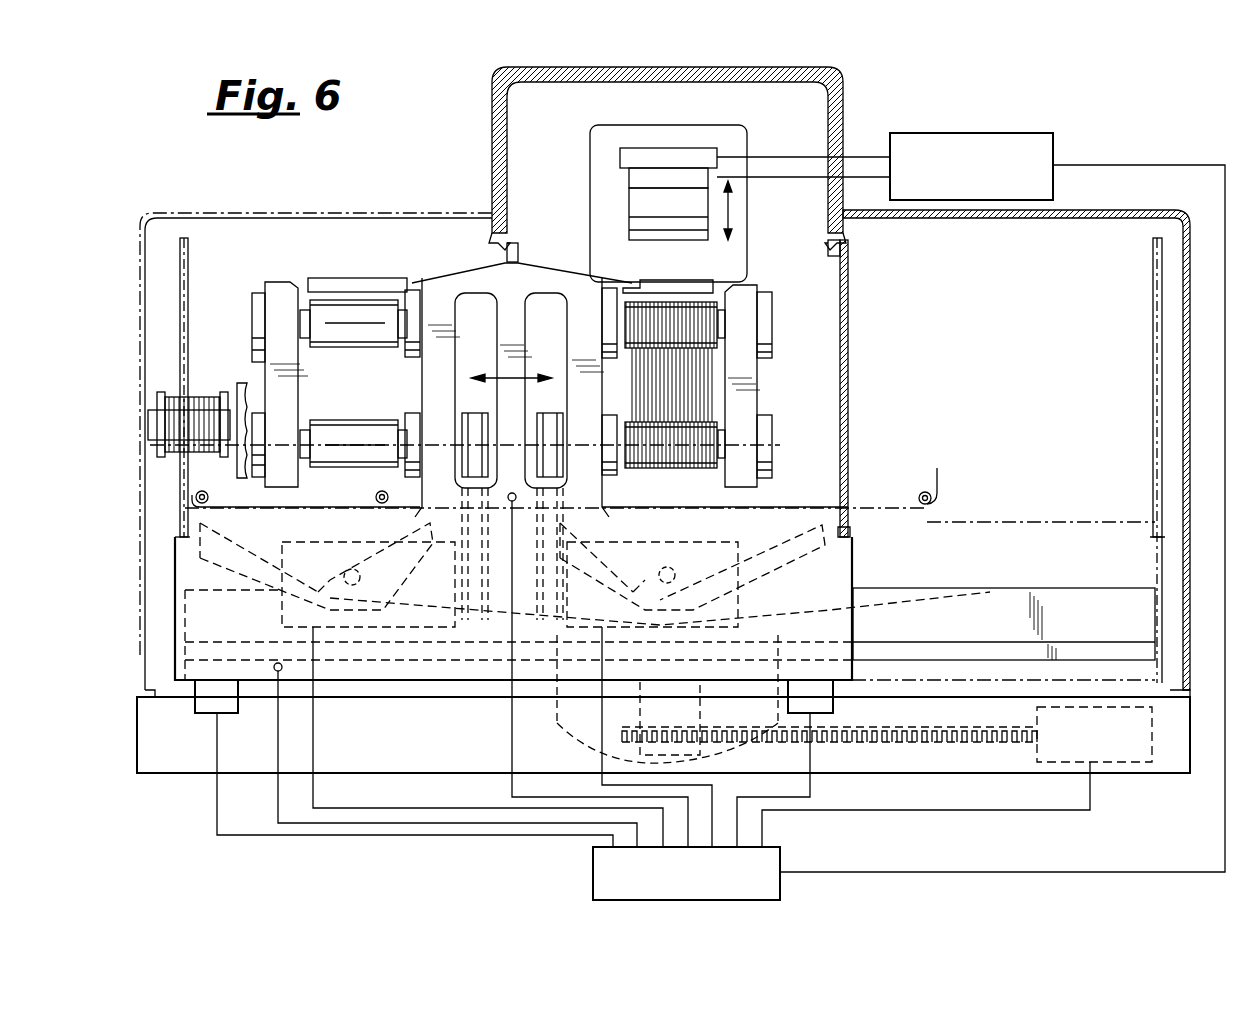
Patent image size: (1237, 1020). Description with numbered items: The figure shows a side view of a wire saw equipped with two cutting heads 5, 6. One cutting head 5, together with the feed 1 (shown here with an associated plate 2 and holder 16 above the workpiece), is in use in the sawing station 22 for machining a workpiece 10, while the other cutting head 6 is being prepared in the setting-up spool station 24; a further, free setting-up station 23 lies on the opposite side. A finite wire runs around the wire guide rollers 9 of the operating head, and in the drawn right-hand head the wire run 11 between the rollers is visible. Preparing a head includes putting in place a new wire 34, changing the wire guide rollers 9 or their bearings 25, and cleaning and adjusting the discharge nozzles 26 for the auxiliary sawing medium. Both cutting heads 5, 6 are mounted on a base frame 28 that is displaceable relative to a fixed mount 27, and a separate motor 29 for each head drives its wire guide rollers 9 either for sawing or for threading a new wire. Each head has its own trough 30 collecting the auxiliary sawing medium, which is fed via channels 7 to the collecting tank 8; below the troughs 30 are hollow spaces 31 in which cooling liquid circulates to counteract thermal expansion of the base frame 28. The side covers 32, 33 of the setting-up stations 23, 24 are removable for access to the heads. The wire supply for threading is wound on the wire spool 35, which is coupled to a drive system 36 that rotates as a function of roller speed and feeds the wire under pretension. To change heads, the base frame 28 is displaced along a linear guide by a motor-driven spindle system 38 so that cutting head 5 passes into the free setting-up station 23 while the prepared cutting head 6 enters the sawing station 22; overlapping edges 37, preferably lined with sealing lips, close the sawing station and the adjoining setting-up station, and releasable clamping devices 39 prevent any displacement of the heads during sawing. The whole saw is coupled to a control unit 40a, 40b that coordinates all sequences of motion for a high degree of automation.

The feed 1 is at (596, 145).
The pressure plate 2 is at (683, 157).
The cutting head 5 is at (762, 382).
The cutting head 6 is at (262, 278).
The channels 7 is at (925, 600).
The collecting tank 8 is at (555, 715).
The wire guide rollers 9 is at (335, 335).
The workpiece 10 is at (640, 210).
The conveyor belt 11 is at (678, 298).
The plate 16 is at (640, 178).
The sawing station 22 is at (522, 158).
The setting-up station 23 is at (1082, 245).
The setting-up spool station 24 is at (314, 230).
The bearings 25 is at (417, 303).
The discharge nozzles 26 is at (340, 280).
The fixed mount 27 is at (185, 760).
The base frame 28 is at (380, 670).
The motor 29 is at (425, 630).
The trough 30 is at (262, 540).
The hollow spaces 31 is at (220, 563).
The side cover 32 is at (240, 215).
The side cover 33 is at (188, 312).
The wire 34 is at (353, 507).
The wire spool 35 is at (200, 410).
The drive system 36 is at (247, 392).
The overlapping edges 37 is at (518, 252).
The spindle system 38 is at (965, 745).
The clamping devices 39 is at (230, 705).
The control unit 40a is at (600, 884).
The control unit 40b is at (960, 133).